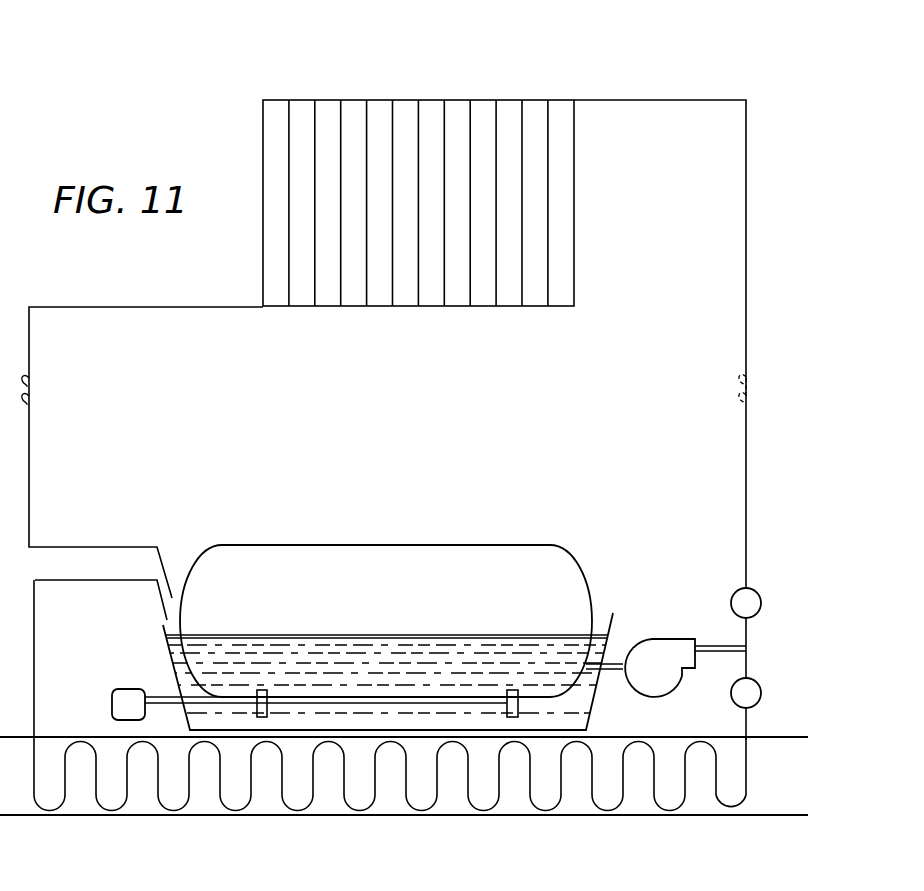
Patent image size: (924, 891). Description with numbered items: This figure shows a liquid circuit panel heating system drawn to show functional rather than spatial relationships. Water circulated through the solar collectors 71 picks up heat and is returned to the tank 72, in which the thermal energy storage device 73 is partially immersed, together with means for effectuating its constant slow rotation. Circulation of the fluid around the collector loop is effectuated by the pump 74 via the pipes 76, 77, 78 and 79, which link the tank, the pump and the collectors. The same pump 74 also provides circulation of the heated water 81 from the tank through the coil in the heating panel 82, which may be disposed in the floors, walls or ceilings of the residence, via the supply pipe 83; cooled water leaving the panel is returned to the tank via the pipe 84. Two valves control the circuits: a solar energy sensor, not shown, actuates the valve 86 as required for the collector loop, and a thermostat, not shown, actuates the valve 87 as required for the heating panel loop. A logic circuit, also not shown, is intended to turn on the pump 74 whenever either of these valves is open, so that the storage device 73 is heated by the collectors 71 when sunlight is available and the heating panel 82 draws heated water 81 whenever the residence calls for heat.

The solar collectors 71 is at (460, 191).
The tank 72 is at (359, 671).
The thermal energy storage device 73 is at (518, 584).
The pump 74 is at (660, 624).
The pipe 76 is at (607, 699).
The pipe 77 is at (719, 606).
The pipe 78 is at (660, 389).
The pipe 79 is at (142, 452).
The heated water 81 is at (295, 690).
The heating panel 82 is at (404, 726).
The supply pipe 83 is at (711, 718).
The pipe 84 is at (101, 600).
The valve 86 is at (778, 588).
The valve 87 is at (778, 673).